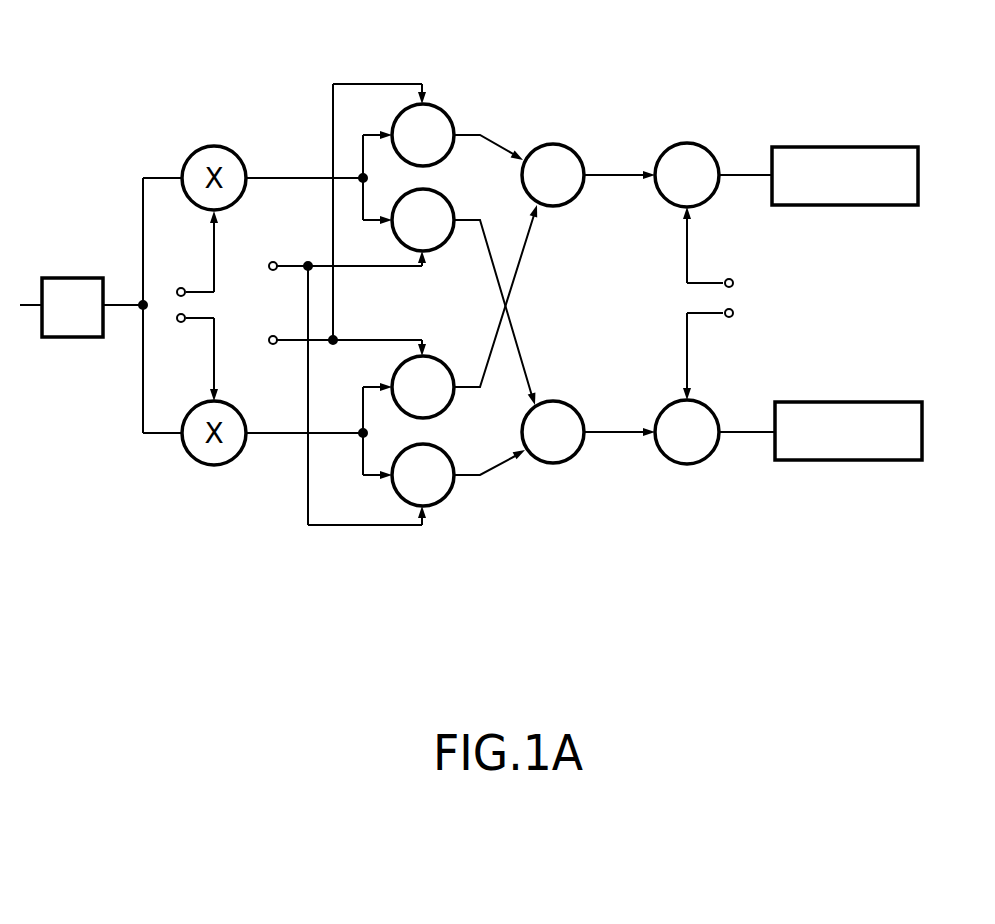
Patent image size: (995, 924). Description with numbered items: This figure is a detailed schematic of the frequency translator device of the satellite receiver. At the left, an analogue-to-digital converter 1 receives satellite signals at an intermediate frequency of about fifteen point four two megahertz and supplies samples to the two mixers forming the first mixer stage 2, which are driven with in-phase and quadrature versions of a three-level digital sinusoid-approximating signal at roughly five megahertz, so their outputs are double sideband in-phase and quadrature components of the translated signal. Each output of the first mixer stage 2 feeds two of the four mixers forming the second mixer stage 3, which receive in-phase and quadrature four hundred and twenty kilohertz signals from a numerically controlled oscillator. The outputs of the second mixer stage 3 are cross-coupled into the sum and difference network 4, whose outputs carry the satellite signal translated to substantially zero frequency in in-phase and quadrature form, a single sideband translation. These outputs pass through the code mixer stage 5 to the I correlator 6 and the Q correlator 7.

The analogue-to-digital converter 1 is at (72, 278).
The first mixer stage 2 is at (214, 495).
The second mixer stage 3 is at (425, 563).
The sum and difference network 4 is at (545, 112).
The code mixer stage 5 is at (685, 115).
The I correlator 6 is at (868, 147).
The Q correlator 7 is at (872, 402).